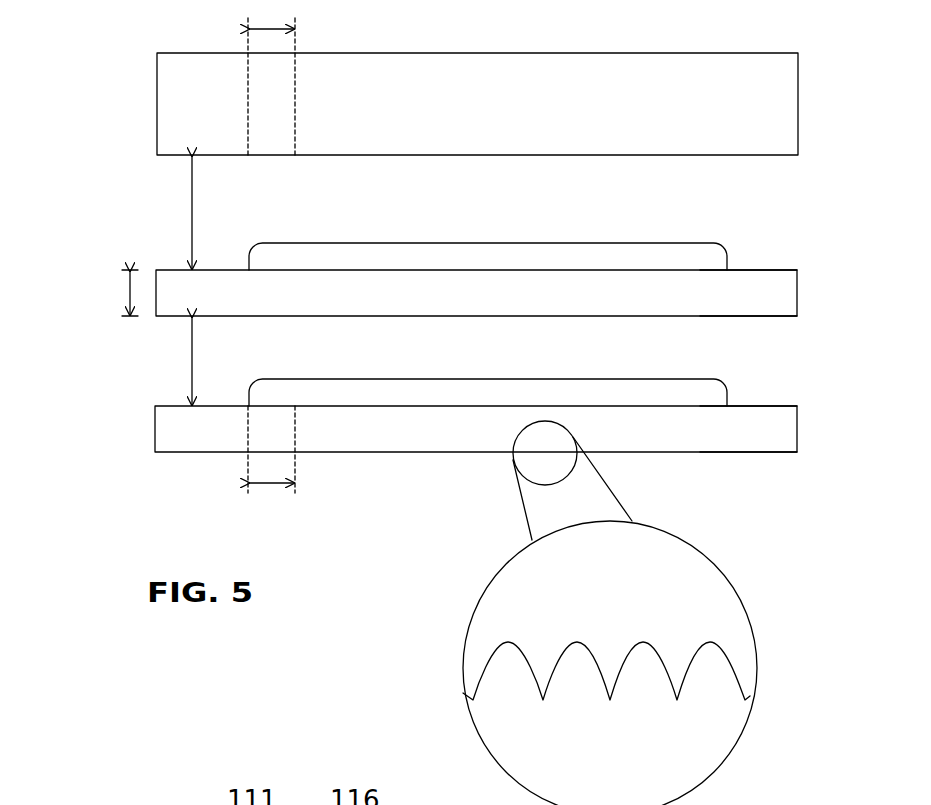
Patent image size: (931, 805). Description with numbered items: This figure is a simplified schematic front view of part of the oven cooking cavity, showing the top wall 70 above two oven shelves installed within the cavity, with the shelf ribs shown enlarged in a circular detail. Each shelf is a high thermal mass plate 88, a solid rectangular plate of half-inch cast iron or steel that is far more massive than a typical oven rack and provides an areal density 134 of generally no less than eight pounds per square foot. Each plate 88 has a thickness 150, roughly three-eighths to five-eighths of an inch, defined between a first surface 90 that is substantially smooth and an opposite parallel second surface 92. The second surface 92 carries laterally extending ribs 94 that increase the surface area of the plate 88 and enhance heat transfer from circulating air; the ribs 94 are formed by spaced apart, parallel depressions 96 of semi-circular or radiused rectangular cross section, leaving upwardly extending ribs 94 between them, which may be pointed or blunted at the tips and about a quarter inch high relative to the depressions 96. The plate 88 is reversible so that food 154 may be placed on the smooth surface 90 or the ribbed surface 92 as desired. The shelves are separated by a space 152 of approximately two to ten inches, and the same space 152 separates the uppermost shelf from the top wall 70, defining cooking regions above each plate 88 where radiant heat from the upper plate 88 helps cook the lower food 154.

The top wall 70 is at (777, 132).
The high thermal mass plate 88 is at (772, 304).
The first surface 90 is at (762, 283).
The second surface 92 is at (748, 318).
The rib 94 is at (610, 695).
The depression 96 is at (575, 688).
The areal density 134 is at (271, 0).
The thickness 150 is at (118, 290).
The space 152 is at (192, 211).
The food 154 is at (690, 262).